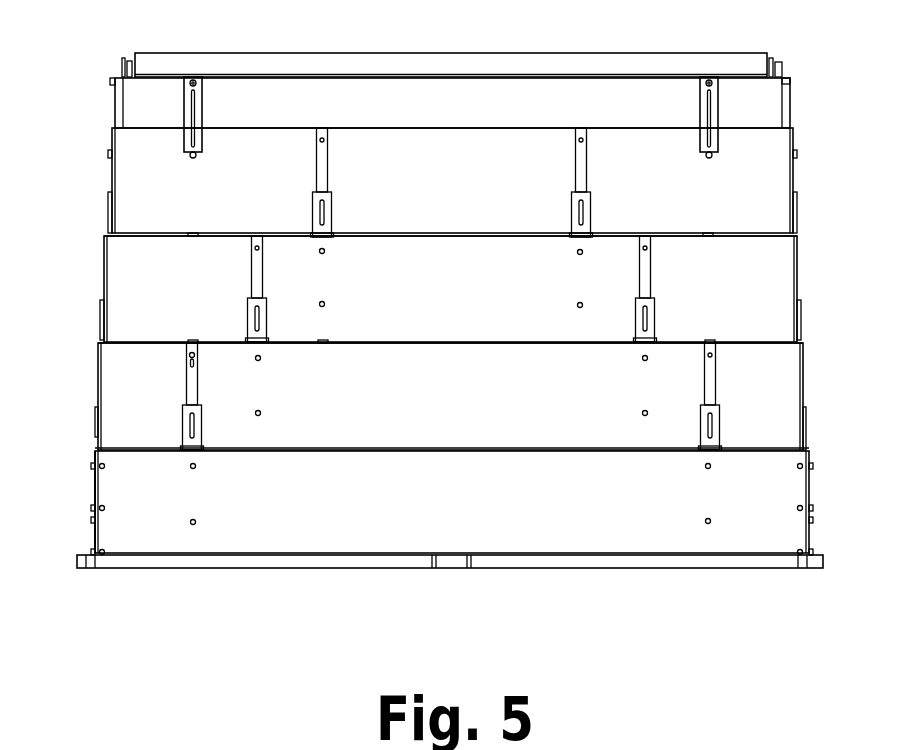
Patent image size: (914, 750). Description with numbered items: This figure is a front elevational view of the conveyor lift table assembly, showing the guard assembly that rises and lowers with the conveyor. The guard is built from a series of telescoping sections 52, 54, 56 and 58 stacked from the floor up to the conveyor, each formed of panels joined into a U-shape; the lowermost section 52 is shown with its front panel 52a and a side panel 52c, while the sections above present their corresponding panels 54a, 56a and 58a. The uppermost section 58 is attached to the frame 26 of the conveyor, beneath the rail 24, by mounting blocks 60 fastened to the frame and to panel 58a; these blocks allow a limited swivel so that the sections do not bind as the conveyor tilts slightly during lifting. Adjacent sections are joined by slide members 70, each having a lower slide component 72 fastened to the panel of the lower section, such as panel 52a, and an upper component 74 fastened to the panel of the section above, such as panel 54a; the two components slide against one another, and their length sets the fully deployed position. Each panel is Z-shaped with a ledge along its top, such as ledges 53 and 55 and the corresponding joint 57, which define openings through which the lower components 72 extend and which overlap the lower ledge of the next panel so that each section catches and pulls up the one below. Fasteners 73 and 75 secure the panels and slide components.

The top rail 24 is at (680, 52).
The frame 26 is at (770, 93).
The mounting block 60 is at (112, 98).
The telescoping section 58 is at (765, 178).
The guard section panel 58a is at (542, 194).
The panel joint 57 is at (393, 233).
The telescoping section 56 is at (777, 268).
The panel 56a is at (542, 296).
The ledge 55 is at (393, 342).
The telescoping section 54 is at (780, 392).
The panel 54a is at (542, 404).
The ledge 53 is at (393, 450).
The telescoping section 52 is at (795, 530).
The panel 52a is at (542, 512).
The panel 52c is at (97, 488).
The slide member 70 is at (173, 371).
The lower slide component 72 is at (195, 418).
The fasteners 73 is at (196, 467).
The upper component 74 is at (193, 377).
The connector fastener 75 is at (193, 360).